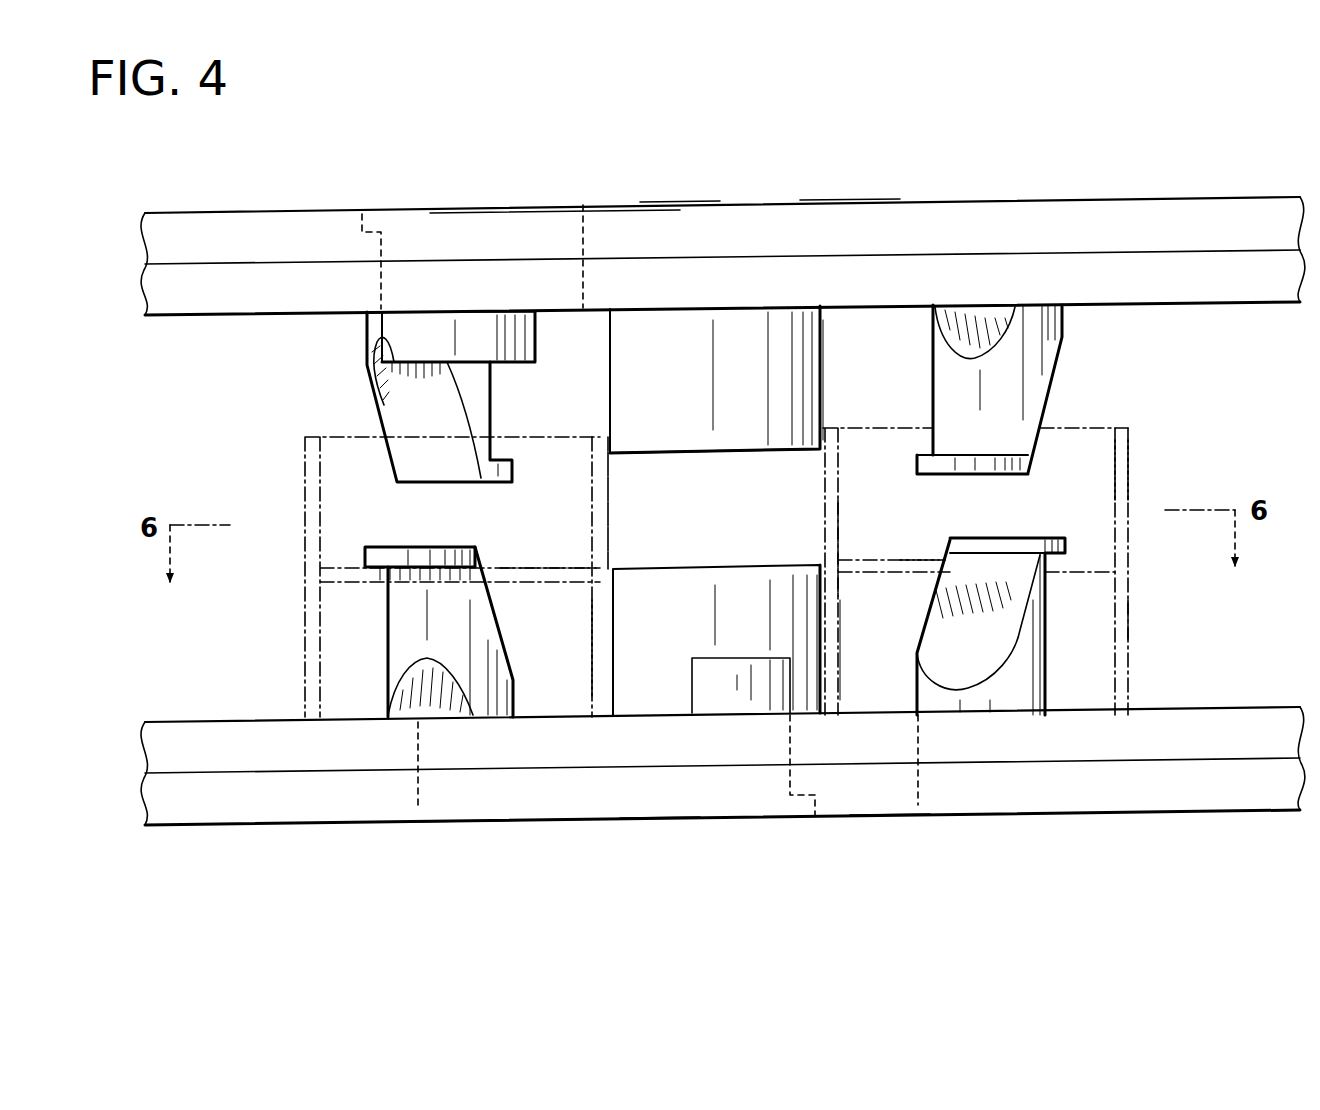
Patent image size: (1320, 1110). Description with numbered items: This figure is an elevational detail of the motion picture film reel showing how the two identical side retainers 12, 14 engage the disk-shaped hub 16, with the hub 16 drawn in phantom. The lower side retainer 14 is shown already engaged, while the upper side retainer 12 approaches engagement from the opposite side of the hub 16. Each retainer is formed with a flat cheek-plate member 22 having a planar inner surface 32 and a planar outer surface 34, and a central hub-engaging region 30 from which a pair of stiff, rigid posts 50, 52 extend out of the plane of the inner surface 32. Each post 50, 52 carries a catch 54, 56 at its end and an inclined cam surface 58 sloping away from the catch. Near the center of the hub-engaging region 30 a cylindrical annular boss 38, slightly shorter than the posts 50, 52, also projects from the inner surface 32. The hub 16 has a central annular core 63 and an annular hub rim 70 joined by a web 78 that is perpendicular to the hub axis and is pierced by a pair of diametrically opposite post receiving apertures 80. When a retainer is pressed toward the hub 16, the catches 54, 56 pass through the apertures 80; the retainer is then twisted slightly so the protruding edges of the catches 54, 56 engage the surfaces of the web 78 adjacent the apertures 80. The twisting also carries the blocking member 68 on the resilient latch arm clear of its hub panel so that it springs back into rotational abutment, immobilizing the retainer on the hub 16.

The side retainer 12 is at (1010, 162).
The side retainer 14 is at (1135, 828).
The hub 16 is at (1136, 471).
The cheek-plate member 22 is at (556, 206).
The hub-engaging region 30 is at (840, 200).
The inner surface 32 is at (870, 307).
The outer surface 34 is at (680, 203).
The boss 38 is at (635, 378).
The post 50 is at (368, 325).
The post 52 is at (1045, 332).
The catch 54 is at (500, 487).
The catch 56 is at (375, 547).
The cam surface 58 is at (437, 450).
The core 63 is at (588, 657).
The blocking member 68 is at (421, 335).
The hub rim 70 is at (1130, 618).
The web 78 is at (882, 560).
The post receiving apertures 80 is at (493, 567).